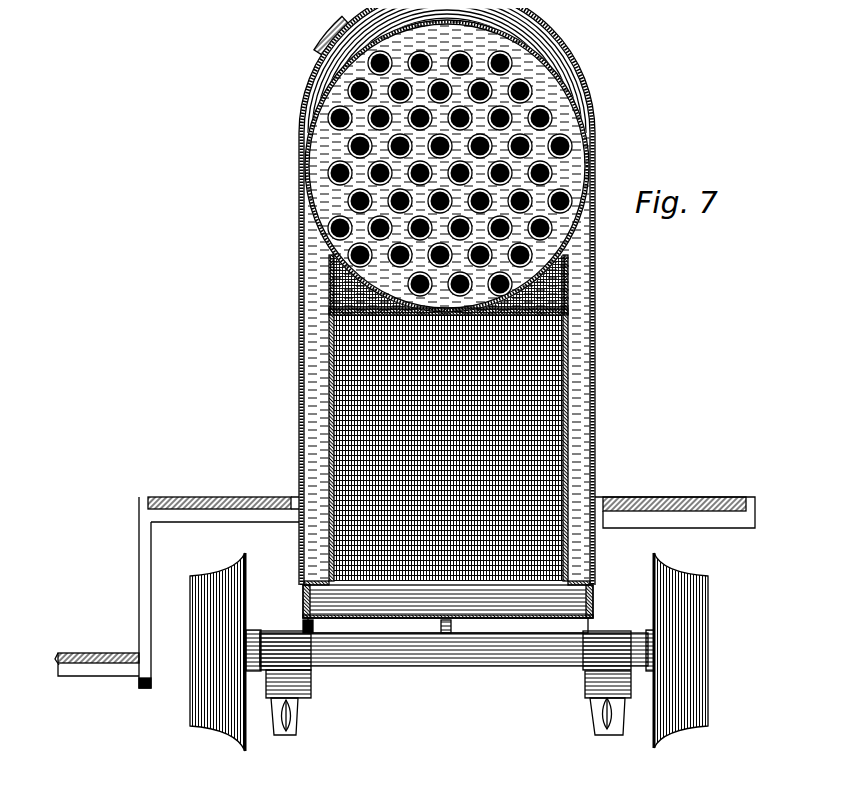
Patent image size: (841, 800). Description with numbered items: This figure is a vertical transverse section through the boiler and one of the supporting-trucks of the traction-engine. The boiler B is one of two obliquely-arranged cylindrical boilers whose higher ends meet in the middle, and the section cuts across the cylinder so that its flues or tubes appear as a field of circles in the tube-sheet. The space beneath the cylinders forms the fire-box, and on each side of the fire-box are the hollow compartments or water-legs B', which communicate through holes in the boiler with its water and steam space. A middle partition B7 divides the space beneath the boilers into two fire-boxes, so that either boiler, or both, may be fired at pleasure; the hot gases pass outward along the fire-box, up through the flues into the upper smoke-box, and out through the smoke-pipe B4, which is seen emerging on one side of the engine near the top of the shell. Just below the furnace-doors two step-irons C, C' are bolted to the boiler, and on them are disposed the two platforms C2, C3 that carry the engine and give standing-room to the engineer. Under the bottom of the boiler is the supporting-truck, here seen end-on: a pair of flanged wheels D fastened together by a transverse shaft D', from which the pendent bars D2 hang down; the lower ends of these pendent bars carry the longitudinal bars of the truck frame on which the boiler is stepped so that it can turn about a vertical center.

The boiler B is at (447, 166).
The water-leg B' is at (448, 296).
The smoke-pipe B4 is at (319, 38).
The middle partition B7 is at (470, 432).
The step-iron C is at (225, 535).
The step-iron C' is at (128, 600).
The platform C2 is at (212, 488).
The platform C3 is at (97, 653).
The flanged wheel D is at (439, 652).
The transverse shaft D' is at (454, 651).
The pendent bar D2 is at (290, 718).